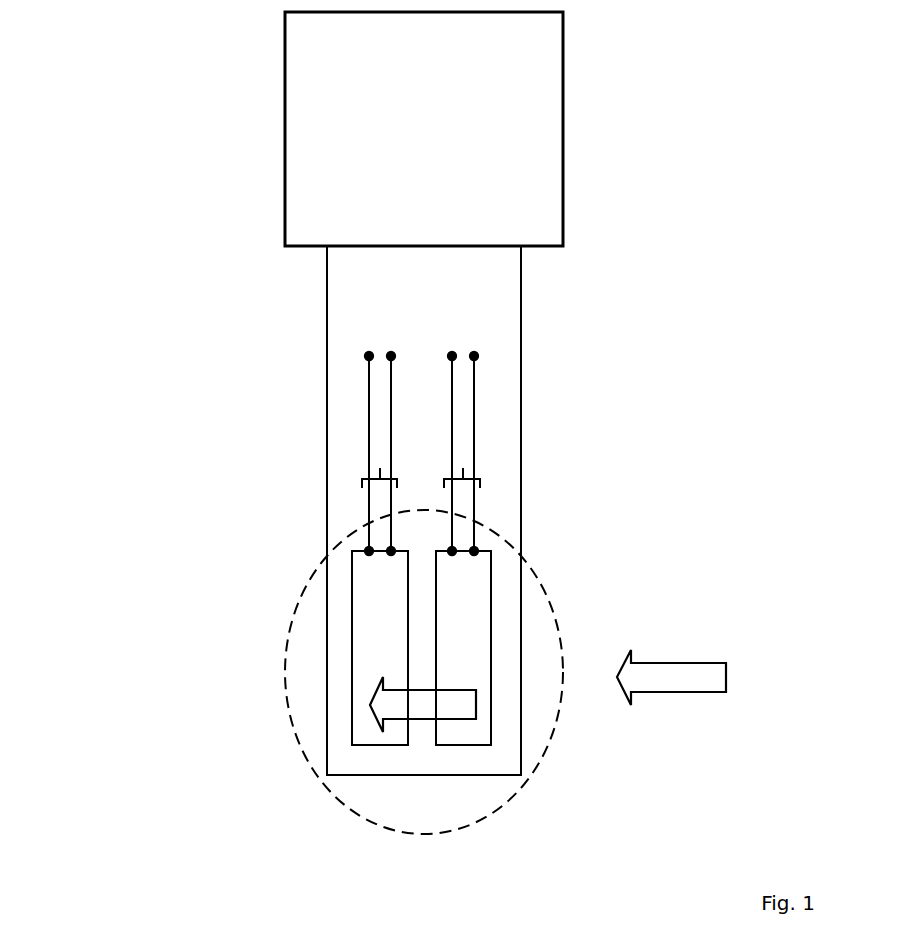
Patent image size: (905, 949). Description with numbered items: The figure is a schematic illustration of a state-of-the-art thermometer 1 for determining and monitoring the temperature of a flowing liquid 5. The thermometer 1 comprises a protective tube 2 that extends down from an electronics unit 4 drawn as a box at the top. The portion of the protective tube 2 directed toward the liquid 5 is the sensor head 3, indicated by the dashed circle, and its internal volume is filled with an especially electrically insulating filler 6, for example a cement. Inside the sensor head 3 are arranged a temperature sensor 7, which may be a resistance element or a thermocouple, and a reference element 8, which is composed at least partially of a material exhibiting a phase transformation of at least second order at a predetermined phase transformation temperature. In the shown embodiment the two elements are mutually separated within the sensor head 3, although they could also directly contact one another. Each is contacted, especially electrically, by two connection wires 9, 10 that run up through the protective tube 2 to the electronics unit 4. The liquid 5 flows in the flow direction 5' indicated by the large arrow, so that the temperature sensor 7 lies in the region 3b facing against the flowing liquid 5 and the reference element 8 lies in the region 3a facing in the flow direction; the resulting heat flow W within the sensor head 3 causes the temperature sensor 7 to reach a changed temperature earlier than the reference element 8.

The thermometer 1 is at (34, 67).
The protective tube 2 is at (328, 466).
The sensor head 3 is at (371, 667).
The first side of sensor section 3a is at (534, 667).
The second side of sensor section 3b is at (313, 667).
The electronics unit 4 is at (424, 129).
The liquid 5 is at (424, 683).
The flow direction 5' is at (671, 677).
The filler 6 is at (507, 762).
The temperature sensor 7 is at (380, 549).
The reference element 8 is at (463, 549).
The connection wires 9 is at (454, 457).
The connection wires 10 is at (380, 468).
The heat flow W is at (423, 704).